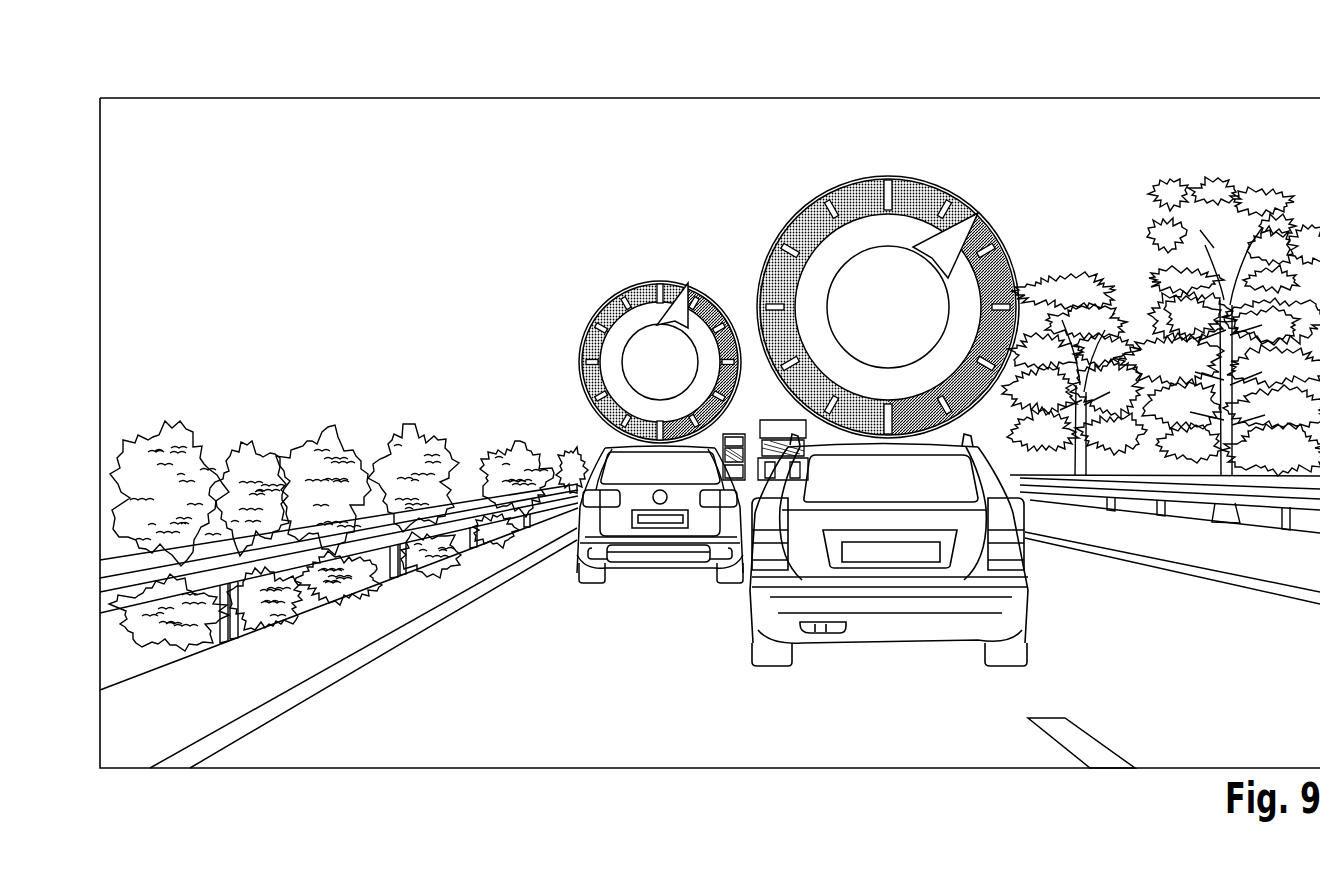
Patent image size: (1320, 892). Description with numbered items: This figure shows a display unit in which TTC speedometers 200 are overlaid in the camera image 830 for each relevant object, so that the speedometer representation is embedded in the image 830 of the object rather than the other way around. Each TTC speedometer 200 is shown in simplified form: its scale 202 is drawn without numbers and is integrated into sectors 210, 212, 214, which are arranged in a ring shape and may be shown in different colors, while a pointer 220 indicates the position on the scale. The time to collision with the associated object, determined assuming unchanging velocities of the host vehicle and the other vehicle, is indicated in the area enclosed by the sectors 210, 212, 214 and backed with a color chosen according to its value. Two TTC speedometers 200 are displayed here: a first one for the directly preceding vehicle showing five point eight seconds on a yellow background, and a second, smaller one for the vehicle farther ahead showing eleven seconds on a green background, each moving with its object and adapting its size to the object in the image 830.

The TTC speedometer 200 is at (768, 190).
The scale 202 is at (863, 178).
The sector 210 is at (912, 178).
The sector 212 is at (766, 276).
The sector 214 is at (1016, 272).
The pointer / needle 220 is at (981, 214).
The camera image 830 is at (1250, 120).